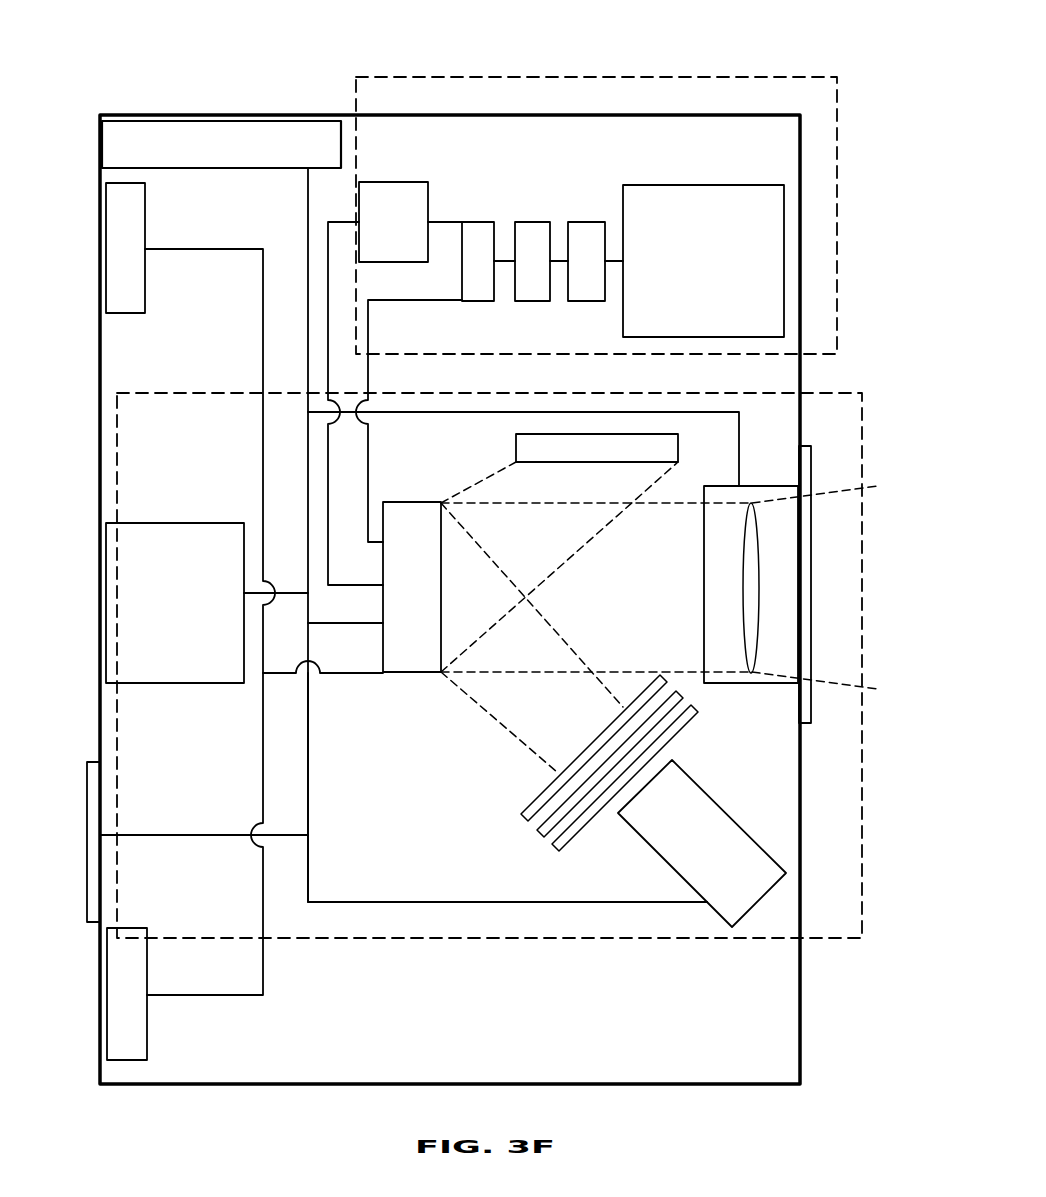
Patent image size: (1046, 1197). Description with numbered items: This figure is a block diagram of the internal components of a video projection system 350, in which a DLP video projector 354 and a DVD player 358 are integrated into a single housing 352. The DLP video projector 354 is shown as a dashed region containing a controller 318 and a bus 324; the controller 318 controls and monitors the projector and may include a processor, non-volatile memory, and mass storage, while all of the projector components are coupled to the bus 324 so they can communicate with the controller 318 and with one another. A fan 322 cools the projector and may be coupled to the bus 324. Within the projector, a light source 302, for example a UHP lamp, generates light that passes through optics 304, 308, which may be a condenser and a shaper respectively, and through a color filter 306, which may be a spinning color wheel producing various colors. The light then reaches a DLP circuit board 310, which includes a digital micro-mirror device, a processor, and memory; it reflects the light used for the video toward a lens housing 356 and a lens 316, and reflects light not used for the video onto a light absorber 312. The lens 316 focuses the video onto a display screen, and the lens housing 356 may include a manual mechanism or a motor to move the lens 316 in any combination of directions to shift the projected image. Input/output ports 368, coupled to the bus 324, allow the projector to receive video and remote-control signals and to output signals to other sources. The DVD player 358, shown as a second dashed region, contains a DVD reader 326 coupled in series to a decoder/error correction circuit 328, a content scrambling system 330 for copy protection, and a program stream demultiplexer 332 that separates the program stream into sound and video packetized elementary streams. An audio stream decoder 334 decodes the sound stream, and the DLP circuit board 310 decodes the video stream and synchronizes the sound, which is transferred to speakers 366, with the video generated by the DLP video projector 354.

The video projection system 350 is at (468, 23).
The housing 352 is at (803, 1012).
The DLP video projector 354 is at (862, 409).
The lens housing 356 is at (811, 569).
The DVD player 358 is at (838, 90).
The light source 302 is at (719, 857).
The optics 304 is at (549, 846).
The color filter 306 is at (534, 831).
The optics 308 is at (519, 814).
The DLP circuit board 310 is at (429, 595).
The light absorber 312 is at (516, 450).
The lens 316 is at (741, 612).
The controller 318 is at (192, 605).
The fan 322 is at (208, 114).
The bus 324 is at (315, 771).
The DVD reader 326 is at (716, 269).
The decoder/error correction circuit 328 is at (584, 220).
The content scrambling system 330 is at (528, 220).
The program stream demultiplexer 332 is at (474, 220).
The audio stream decoder 334 is at (410, 231).
The speakers 366 is at (93, 259).
The input/output ports 368 is at (83, 783).